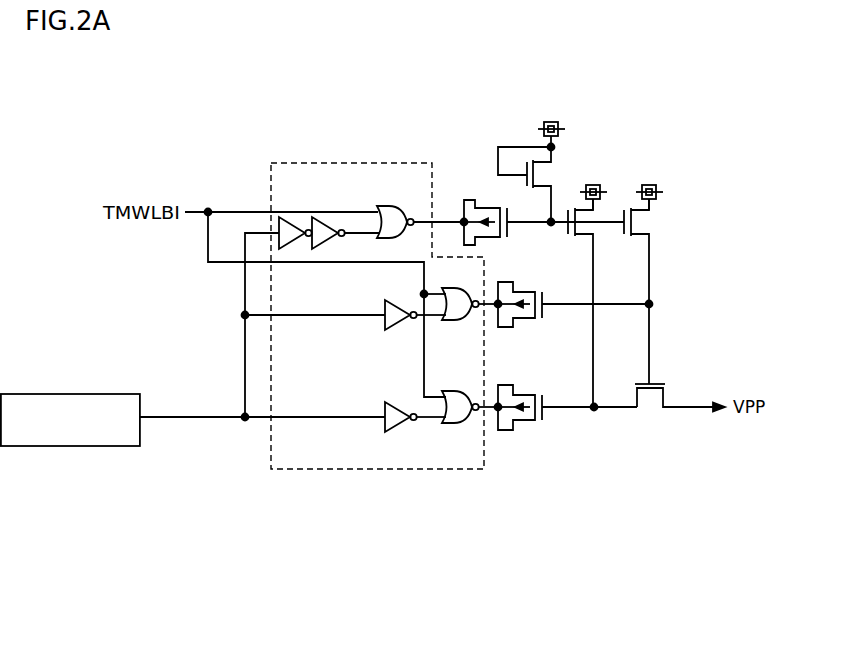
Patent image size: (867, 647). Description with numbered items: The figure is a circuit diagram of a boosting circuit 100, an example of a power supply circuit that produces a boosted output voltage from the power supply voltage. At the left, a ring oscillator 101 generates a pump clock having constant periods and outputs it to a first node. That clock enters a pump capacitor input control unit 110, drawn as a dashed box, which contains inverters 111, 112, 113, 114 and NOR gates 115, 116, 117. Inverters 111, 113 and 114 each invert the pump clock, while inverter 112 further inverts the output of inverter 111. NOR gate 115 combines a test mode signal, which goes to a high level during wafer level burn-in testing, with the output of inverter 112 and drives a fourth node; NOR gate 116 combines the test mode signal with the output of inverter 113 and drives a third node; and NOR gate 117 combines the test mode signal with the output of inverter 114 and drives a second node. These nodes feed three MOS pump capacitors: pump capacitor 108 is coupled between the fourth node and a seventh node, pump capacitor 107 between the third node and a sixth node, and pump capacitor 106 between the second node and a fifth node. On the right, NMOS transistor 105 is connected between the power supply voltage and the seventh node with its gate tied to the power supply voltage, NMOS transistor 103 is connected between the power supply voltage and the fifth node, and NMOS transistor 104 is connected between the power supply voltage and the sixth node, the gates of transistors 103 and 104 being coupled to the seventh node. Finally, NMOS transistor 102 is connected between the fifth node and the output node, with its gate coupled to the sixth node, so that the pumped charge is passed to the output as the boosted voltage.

The boosting circuit 100 is at (725, 83).
The ring oscillator 101 is at (88, 454).
The NMOS transistor 102 is at (653, 398).
The NMOS transistor 103 is at (592, 228).
The NMOS transistor 104 is at (646, 222).
The NMOS transistor 105 is at (546, 172).
The pump capacitor 106 is at (530, 392).
The pump capacitor 107 is at (530, 290).
The pump capacitor 108 is at (470, 199).
The pump capacitor input control unit 110 is at (331, 160).
The inverter 111 is at (292, 247).
The inverter 112 is at (320, 245).
The inverter 113 is at (395, 332).
The inverter 114 is at (402, 434).
The NOR gate 115 is at (389, 241).
The NOR gate 116 is at (455, 322).
The NOR gate 117 is at (455, 425).